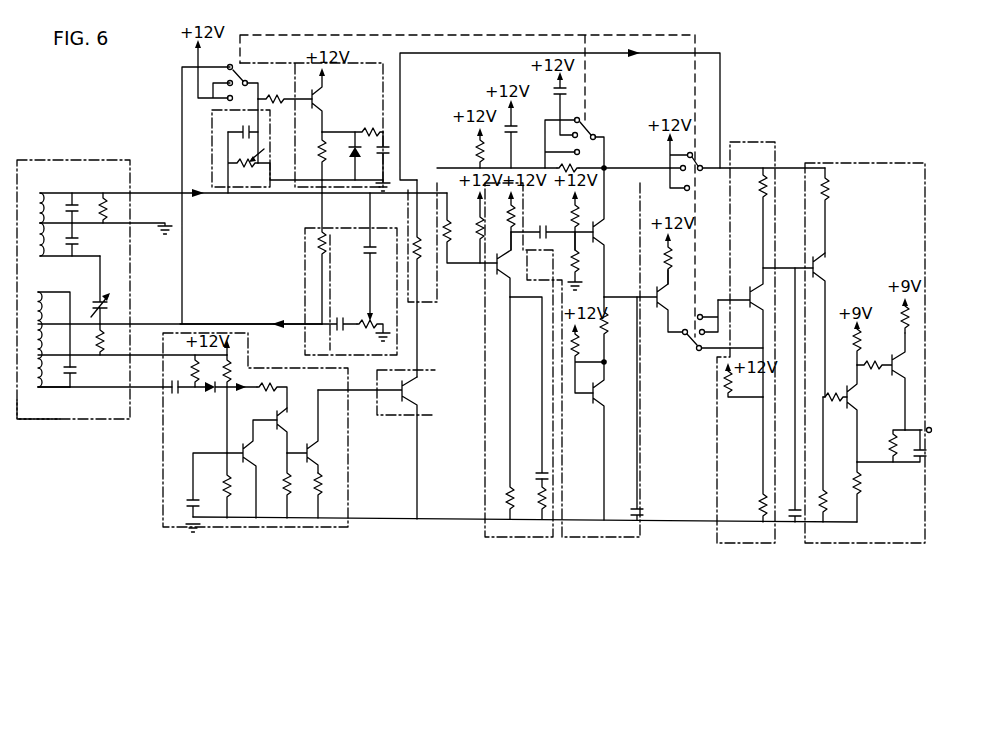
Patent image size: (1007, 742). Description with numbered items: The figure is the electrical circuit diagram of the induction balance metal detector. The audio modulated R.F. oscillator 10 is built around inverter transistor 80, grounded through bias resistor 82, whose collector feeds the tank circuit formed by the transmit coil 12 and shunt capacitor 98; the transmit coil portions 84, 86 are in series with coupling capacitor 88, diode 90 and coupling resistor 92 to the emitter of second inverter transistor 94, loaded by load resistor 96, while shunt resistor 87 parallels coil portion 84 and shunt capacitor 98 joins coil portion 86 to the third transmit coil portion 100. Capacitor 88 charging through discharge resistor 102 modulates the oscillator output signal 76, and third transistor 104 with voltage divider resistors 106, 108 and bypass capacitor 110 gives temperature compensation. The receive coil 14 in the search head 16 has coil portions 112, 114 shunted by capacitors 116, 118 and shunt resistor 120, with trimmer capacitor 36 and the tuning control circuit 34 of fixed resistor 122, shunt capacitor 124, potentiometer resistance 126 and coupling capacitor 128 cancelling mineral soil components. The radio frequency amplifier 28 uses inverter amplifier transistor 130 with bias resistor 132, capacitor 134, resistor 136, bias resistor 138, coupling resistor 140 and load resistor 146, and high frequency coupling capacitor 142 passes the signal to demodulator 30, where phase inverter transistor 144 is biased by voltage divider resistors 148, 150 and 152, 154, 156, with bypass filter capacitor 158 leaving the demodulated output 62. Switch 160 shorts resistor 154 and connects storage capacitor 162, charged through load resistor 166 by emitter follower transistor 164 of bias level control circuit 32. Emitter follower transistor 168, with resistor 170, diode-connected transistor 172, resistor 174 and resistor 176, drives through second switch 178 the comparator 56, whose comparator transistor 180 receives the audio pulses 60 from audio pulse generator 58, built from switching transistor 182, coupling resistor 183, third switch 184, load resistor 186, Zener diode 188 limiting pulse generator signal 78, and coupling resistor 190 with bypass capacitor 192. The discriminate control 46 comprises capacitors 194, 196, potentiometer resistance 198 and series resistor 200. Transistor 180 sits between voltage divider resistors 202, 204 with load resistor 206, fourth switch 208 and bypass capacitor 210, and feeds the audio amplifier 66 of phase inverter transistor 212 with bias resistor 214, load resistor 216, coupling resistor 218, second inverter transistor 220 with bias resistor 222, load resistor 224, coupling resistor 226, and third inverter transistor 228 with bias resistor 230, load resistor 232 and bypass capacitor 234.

The radio frequency oscillator 10 is at (160, 472).
The transmit coil 12 is at (38, 409).
The receive coil 14 is at (44, 256).
The detector search head 16 is at (60, 158).
The radio frequency amplifier 28 is at (483, 450).
The demodulator 30 is at (640, 416).
The bias level control circuit 32 is at (432, 322).
The tuning control circuit 34 is at (336, 291).
The trimmer capacitor 36 is at (112, 304).
The discriminate control 46 is at (205, 124).
The comparator 56 is at (715, 470).
The audio pulse generator 58 is at (385, 52).
The audio pulses 60 is at (463, 49).
The demodulator output 62 is at (650, 296).
The audio amplifier 66 is at (845, 158).
The oscillator output signal 76 is at (244, 322).
The pulse generator signal 78 is at (352, 130).
The inverter transistor 80 is at (315, 431).
The bias resistor 82 is at (326, 486).
The transmit coil portion 84 is at (44, 388).
The transmit coil portion 86 is at (46, 345).
The shunt resistor 87 is at (110, 340).
The coupling capacitor 88 is at (155, 400).
The diode 90 is at (210, 396).
The coupling resistor 92 is at (266, 395).
The second inverter transistor 94 is at (284, 418).
The load resistor 96 is at (282, 485).
The shunt capacitor 98 is at (74, 370).
The third transmit coil portion 100 is at (26, 352).
The discharge resistor 102 is at (190, 374).
The third transistor 104 is at (240, 445).
The voltage divider resistor 106 is at (233, 372).
The voltage divider resistor 108 is at (220, 490).
The bypass capacitor 110 is at (185, 505).
The receive coil portion 112 is at (40, 193).
The receive coil portion 114 is at (33, 254).
The capacitor 116 is at (84, 206).
The capacitor 118 is at (82, 245).
The shunt resistor 120 is at (112, 211).
The fixed resistor 122 is at (316, 255).
The shunt capacitor 124 is at (360, 248).
The potentiometer resistance 126 is at (368, 330).
The coupling capacitor 128 is at (342, 310).
The inverter amplifier transistor 130 is at (505, 285).
The bias resistor 132 is at (502, 507).
The capacitor 134 is at (546, 475).
The resistor 136 is at (536, 505).
The bias resistor 138 is at (494, 272).
The coupling resistor 140 is at (456, 245).
The high frequency coupling capacitor 142 is at (570, 230).
The phase inverter transistor 144 is at (606, 242).
The load resistor 146 is at (520, 218).
The voltage divider resistor 148 is at (580, 222).
The voltage divider resistor 150 is at (585, 265).
The voltage divider resistor 152 is at (608, 182).
The voltage divider resistor 154 is at (572, 162).
The voltage divider resistor 156 is at (476, 150).
The high frequency bypass filter capacitor 158 is at (648, 510).
The switch 160 is at (592, 133).
The storage capacitor 162 is at (528, 121).
The emitter follower transistor 164 is at (428, 390).
The load resistor 166 is at (412, 240).
The emitter follower transistor 168 is at (612, 322).
The resistor 170 is at (679, 264).
The transistor 172 is at (602, 393).
The resistor 174 is at (612, 362).
The resistor 176 is at (610, 338).
The second switch 178 is at (693, 348).
The comparator transistor 180 is at (757, 300).
The inverter switching transistor 182 is at (320, 92).
The coupling resistor 183 is at (285, 82).
The third switch 184 is at (240, 66).
The load resistor 186 is at (318, 150).
The Zener diode 188 is at (390, 156).
The coupling resistor 190 is at (356, 122).
The bypass capacitor 192 is at (392, 148).
The capacitor 194 is at (262, 128).
The capacitor 196 is at (232, 132).
The potentiometer resistance 198 is at (268, 185).
The series resistor 200 is at (232, 160).
The voltage divider resistor 202 is at (724, 393).
The voltage divider resistor 204 is at (757, 510).
The load resistor 206 is at (772, 180).
The fourth switch 208 is at (704, 157).
The bypass capacitor 210 is at (790, 515).
The phase inverter transistor 212 is at (824, 262).
The bias resistor 214 is at (832, 190).
The load resistor 216 is at (828, 500).
The coupling resistor 218 is at (831, 390).
The second inverter transistor 220 is at (852, 396).
The bias resistor 222 is at (866, 480).
The load resistor 224 is at (868, 335).
The coupling resistor 226 is at (878, 365).
The third inverter transistor 228 is at (918, 390).
The bias resistor 230 is at (900, 320).
The load resistor 232 is at (888, 445).
The bypass capacitor 234 is at (914, 450).